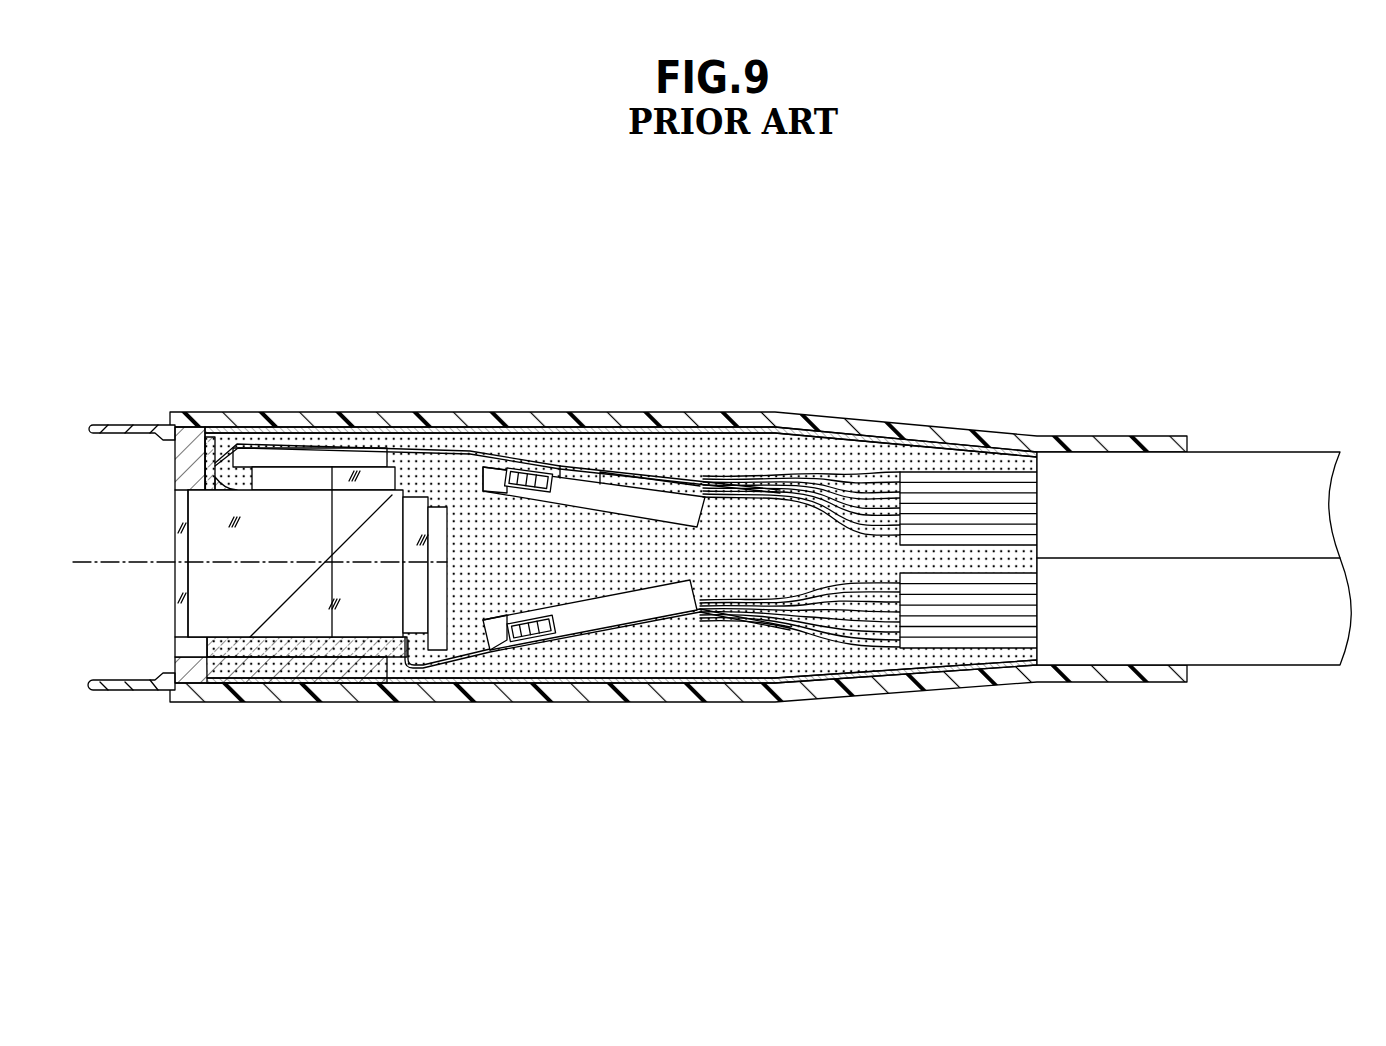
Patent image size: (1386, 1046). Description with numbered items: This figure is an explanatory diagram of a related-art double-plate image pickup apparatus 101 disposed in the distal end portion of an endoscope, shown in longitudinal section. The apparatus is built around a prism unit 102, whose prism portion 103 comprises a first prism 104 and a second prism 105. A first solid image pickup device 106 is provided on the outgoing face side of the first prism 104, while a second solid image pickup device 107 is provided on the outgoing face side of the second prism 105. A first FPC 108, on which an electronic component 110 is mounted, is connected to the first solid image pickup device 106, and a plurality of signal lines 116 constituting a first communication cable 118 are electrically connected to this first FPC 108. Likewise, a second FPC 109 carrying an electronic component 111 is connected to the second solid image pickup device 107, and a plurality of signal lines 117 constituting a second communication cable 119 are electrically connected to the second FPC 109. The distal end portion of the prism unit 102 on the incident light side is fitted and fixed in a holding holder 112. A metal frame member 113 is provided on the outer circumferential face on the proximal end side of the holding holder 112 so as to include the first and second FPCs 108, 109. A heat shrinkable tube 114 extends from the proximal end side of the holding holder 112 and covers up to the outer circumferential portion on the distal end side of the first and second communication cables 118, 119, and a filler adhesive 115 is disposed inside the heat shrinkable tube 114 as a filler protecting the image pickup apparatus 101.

The double-plate image pickup apparatus 101 is at (677, 322).
The prism unit 102 is at (318, 569).
The prism portion 103 is at (257, 594).
The first prism 104 is at (198, 620).
The second prism 105 is at (344, 620).
The first solid image pickup device 106 is at (348, 456).
The second solid image pickup device 107 is at (441, 622).
The first FPC 108 is at (441, 455).
The second FPC 109 is at (498, 652).
The electronic component 110 is at (621, 508).
The electronic component 111 is at (608, 615).
The holding holder 112 is at (178, 440).
The metal frame member 113 is at (549, 676).
The heat shrinkable tube 114 is at (722, 432).
The filler adhesive 115 is at (507, 552).
The signal lines 116 is at (790, 486).
The signal lines 117 is at (736, 628).
The first communication cable 118 is at (1141, 476).
The second communication cable 119 is at (1118, 630).